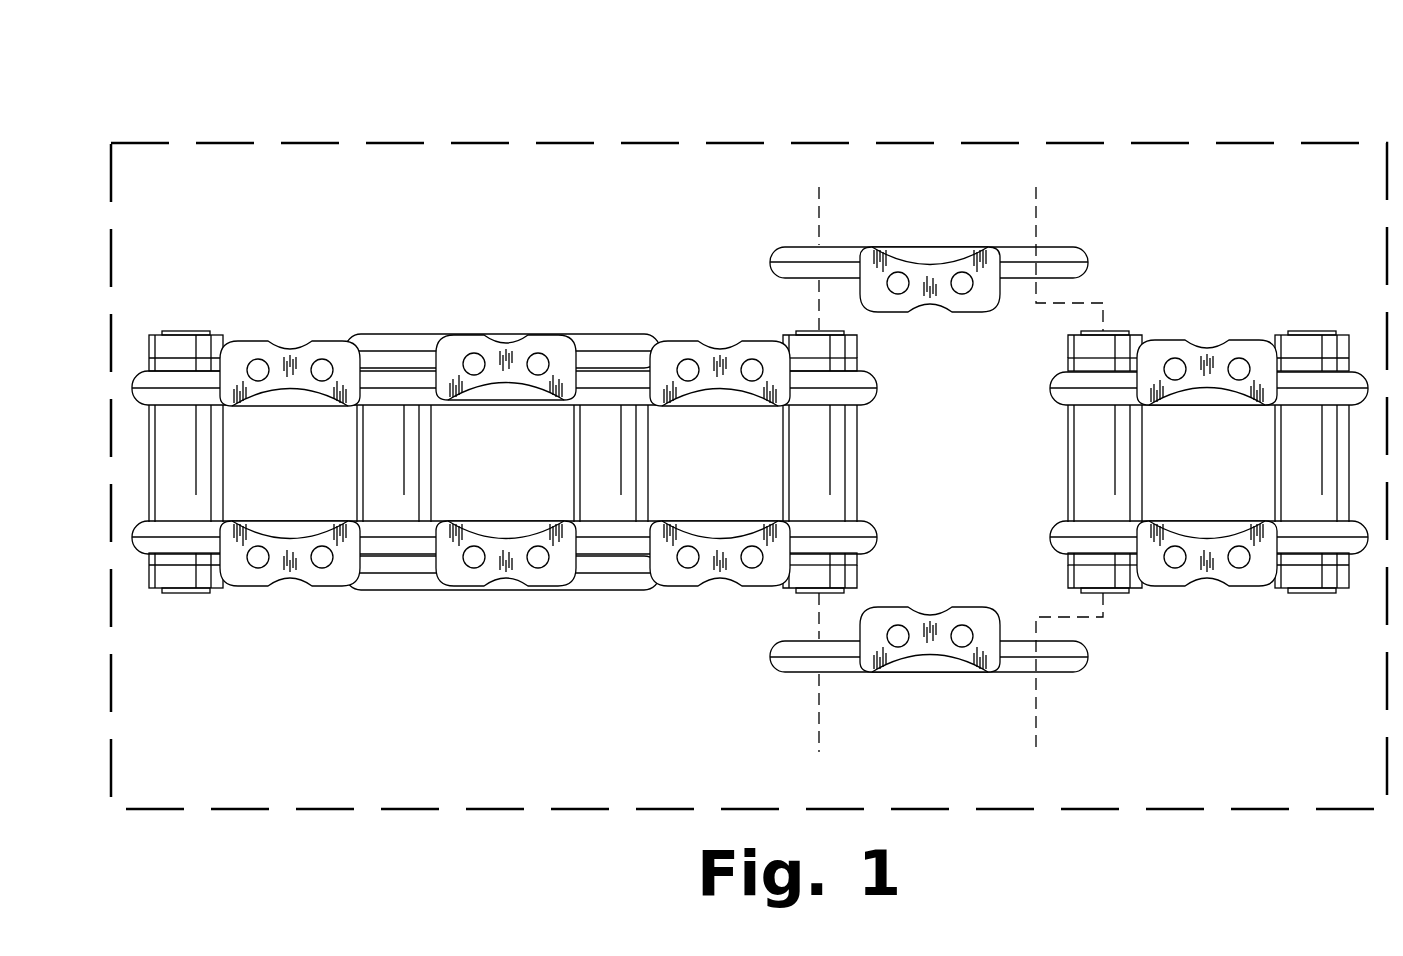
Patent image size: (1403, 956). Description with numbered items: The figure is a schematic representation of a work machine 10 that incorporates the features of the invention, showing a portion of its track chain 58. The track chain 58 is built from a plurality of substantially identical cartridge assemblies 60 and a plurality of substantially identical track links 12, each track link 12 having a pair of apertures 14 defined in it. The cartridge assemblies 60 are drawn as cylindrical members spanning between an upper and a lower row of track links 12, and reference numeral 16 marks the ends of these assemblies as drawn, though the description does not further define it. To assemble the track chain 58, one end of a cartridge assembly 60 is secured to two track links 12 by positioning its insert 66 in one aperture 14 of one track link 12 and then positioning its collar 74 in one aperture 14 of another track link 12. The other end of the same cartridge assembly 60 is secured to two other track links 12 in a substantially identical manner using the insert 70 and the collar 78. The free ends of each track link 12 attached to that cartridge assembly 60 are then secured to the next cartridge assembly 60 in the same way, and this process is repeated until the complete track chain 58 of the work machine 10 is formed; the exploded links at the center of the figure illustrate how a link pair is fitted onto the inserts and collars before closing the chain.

The work machine 10 is at (1282, 106).
The track chain 58 is at (748, 457).
The track link 12 is at (630, 340).
The aperture 14 is at (792, 246).
The pin 16 is at (190, 331).
The cartridge assembly 60 is at (222, 476).
The insert 66 is at (860, 370).
The insert 70 is at (855, 567).
The collar 74 is at (853, 344).
The collar 78 is at (857, 578).